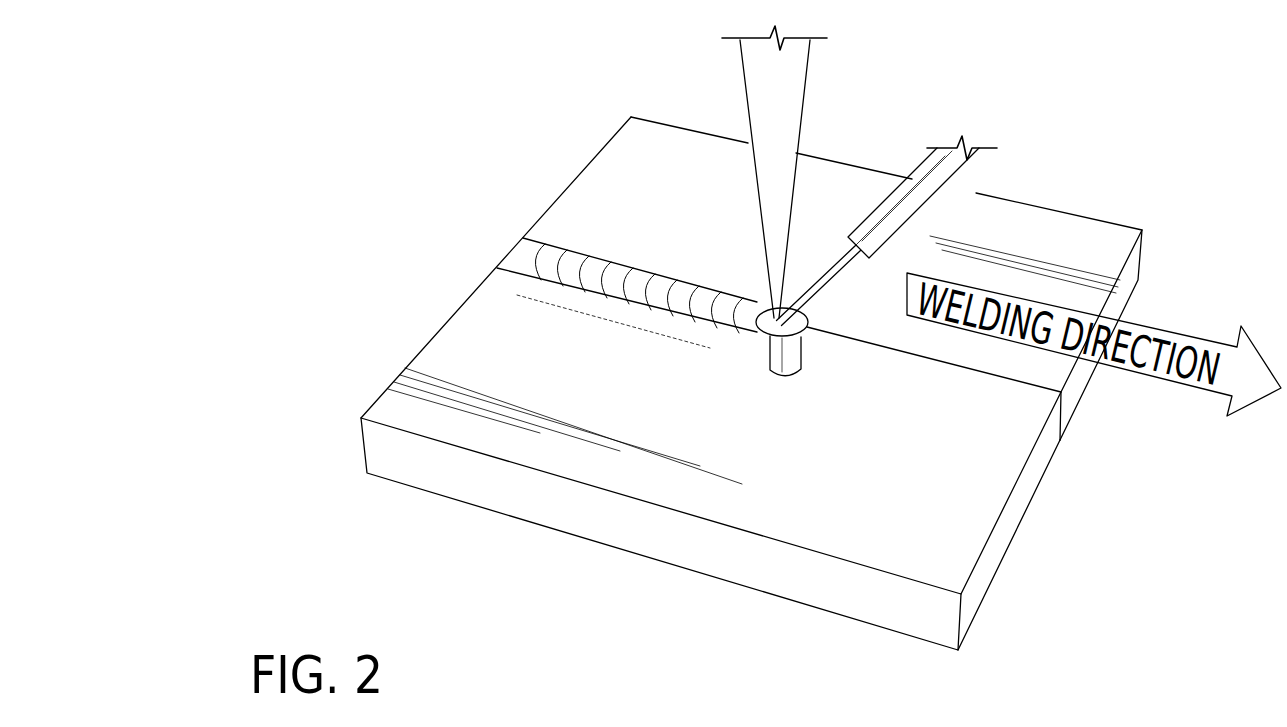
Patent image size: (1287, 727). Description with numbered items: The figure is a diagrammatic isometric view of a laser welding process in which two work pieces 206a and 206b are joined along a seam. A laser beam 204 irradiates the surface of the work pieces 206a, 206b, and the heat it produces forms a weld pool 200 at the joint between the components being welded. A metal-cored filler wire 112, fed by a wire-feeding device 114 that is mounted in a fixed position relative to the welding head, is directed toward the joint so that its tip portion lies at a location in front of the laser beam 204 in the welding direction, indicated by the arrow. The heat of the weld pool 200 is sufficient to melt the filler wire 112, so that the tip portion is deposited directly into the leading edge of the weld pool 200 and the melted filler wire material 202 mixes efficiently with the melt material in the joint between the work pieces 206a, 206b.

The weld pool 200 is at (762, 300).
The melted filler wire material 202 is at (805, 348).
The laser beam 204 is at (804, 107).
The metal-cored filler wire 112 is at (822, 276).
The wire-feeding device 114 is at (962, 190).
The work piece 206a is at (1083, 247).
The work piece 206b is at (960, 552).